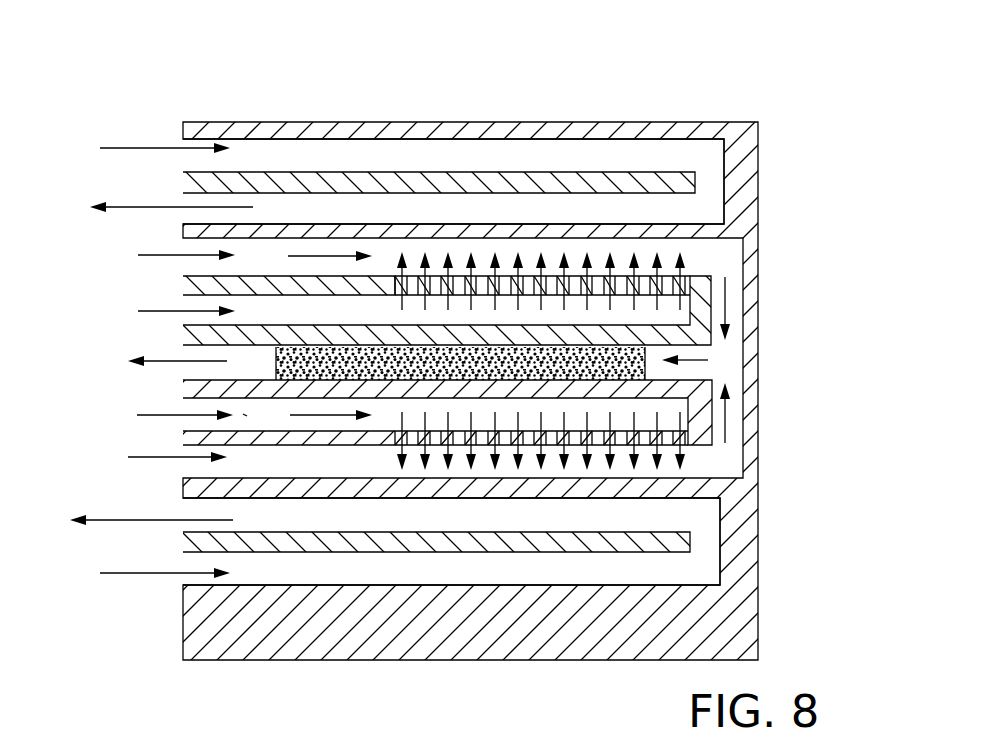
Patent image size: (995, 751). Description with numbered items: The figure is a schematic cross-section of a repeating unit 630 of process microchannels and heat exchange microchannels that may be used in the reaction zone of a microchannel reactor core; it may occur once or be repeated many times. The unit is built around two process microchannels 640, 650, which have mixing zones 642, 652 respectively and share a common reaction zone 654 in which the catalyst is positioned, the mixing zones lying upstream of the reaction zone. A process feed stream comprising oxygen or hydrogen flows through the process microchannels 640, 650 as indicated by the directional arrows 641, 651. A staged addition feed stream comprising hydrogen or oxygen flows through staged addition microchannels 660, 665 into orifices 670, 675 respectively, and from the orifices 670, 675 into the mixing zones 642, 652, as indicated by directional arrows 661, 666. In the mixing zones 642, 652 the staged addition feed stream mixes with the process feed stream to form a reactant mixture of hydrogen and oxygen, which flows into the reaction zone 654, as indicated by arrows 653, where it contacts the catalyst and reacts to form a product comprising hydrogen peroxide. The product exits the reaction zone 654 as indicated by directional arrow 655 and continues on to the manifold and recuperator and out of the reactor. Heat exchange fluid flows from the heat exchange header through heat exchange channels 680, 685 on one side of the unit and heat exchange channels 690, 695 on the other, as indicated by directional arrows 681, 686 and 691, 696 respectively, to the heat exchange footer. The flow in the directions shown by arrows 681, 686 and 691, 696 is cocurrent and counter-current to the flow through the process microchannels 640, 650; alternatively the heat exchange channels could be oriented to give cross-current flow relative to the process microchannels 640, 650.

The repeating unit 630 is at (233, 110).
The heat exchange channel 690 is at (628, 158).
The heat exchange channel 695 is at (647, 208).
The directional arrow 691 is at (160, 148).
The directional arrow 696 is at (166, 207).
The directional arrow 651 is at (160, 255).
The staged addition microchannel 660 is at (303, 316).
The mixing zone 652 is at (508, 253).
The process microchannel 650 is at (385, 258).
The directional arrow 661 is at (160, 311).
The orifice 670 is at (712, 273).
The arrow 653 is at (727, 290).
The reaction zone 654 is at (638, 352).
The directional arrow 655 is at (166, 361).
The orifice 675 is at (694, 445).
The directional arrow 666 is at (160, 415).
The staged addition microchannel 665 is at (288, 420).
The process microchannel 640 is at (343, 458).
The mixing zone 642 is at (482, 468).
The directional arrow 641 is at (160, 457).
The directional arrow 686 is at (157, 520).
The directional arrow 681 is at (160, 573).
The heat exchange channel 685 is at (598, 517).
The heat exchange channel 680 is at (537, 570).